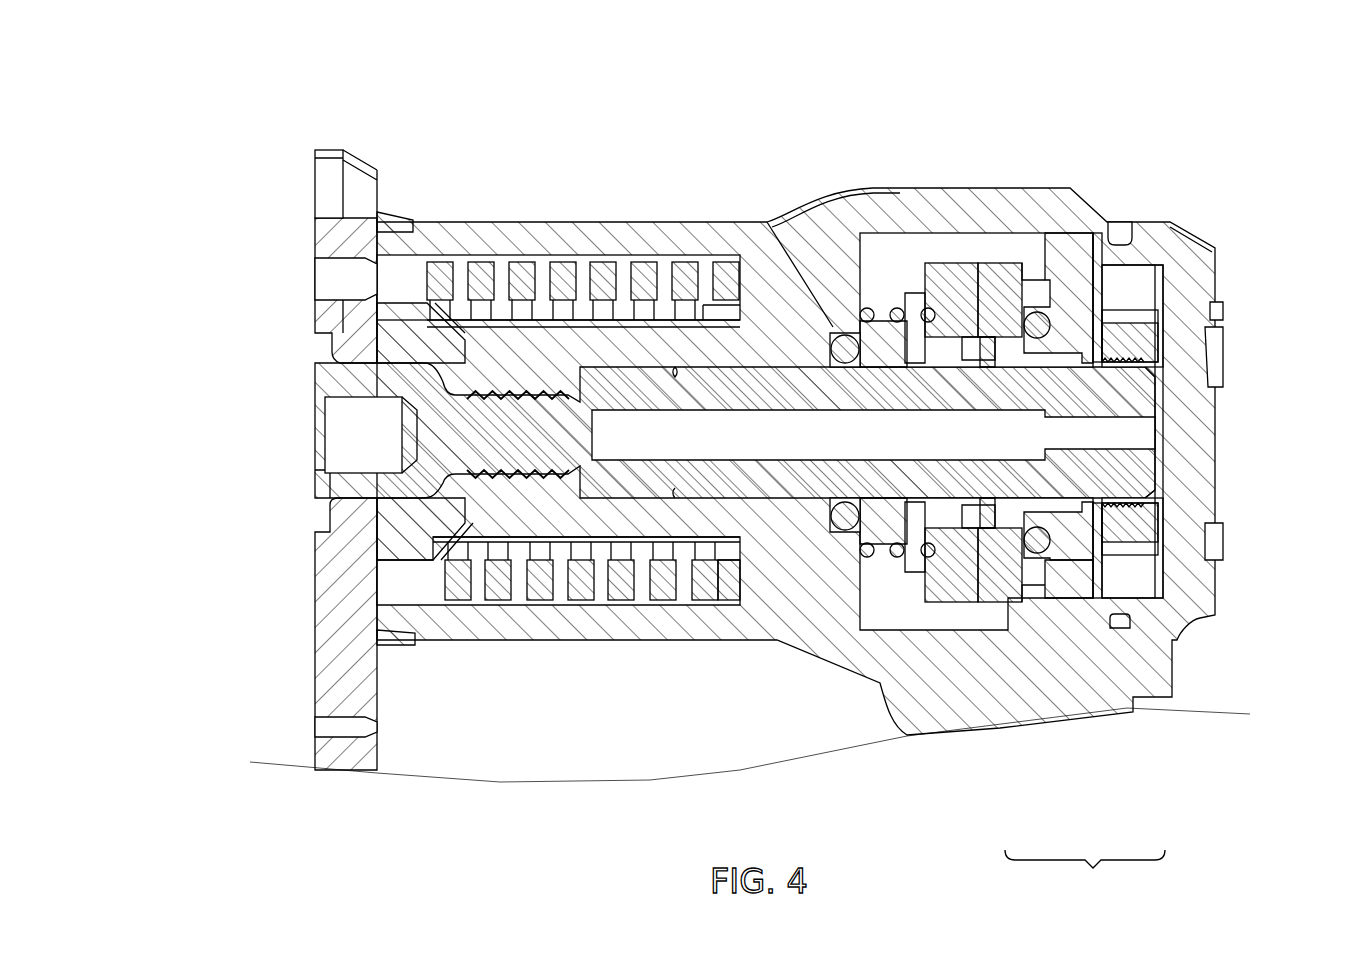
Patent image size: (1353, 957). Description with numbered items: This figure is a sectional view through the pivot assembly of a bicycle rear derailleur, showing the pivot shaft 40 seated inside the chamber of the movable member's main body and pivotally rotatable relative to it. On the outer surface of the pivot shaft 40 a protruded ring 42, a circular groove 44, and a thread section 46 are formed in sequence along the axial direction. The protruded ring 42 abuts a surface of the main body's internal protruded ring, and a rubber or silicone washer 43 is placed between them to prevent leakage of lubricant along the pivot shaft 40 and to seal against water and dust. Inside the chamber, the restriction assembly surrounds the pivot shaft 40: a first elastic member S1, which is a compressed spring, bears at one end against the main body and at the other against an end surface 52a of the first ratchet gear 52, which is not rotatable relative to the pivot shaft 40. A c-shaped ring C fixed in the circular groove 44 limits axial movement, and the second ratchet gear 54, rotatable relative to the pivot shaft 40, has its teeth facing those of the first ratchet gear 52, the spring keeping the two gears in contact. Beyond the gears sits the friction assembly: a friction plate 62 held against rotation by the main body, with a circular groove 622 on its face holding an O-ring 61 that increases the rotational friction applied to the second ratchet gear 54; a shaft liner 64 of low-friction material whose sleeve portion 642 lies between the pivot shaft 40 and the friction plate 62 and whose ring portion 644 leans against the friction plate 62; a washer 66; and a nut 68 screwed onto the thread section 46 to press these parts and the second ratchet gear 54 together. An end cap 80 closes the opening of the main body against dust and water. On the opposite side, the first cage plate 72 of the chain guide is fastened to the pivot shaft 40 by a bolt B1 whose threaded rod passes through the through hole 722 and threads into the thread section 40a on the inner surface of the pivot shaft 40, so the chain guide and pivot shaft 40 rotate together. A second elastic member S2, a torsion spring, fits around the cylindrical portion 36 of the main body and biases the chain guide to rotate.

The first cage plate 72 is at (330, 150).
The through hole 722 is at (355, 357).
The bolt B1 is at (330, 500).
The second elastic member S2 is at (548, 273).
The cylindrical portion 36 is at (610, 520).
The pivot shaft 40 is at (735, 614).
The thread section 40a is at (495, 490).
The protruded ring 42 is at (883, 307).
The washer 43 is at (835, 335).
The first elastic member S1 is at (900, 307).
The end surface 52a is at (925, 293).
The first ratchet gear 52 is at (960, 262).
The second ratchet gear 54 is at (1013, 263).
The friction plate 62 is at (1048, 312).
The circular groove 622 is at (1063, 260).
The end cap 80 is at (1215, 245).
The washer 66 is at (1102, 305).
The nut 68 is at (1140, 340).
The circular groove 44 is at (1152, 480).
The thread section 46 is at (1152, 508).
The c-shaped ring C is at (988, 485).
The O-ring 61 is at (1037, 555).
The sleeve portion 642 is at (1060, 512).
The ring portion 644 is at (1080, 570).
The shaft liner 64 is at (1085, 876).